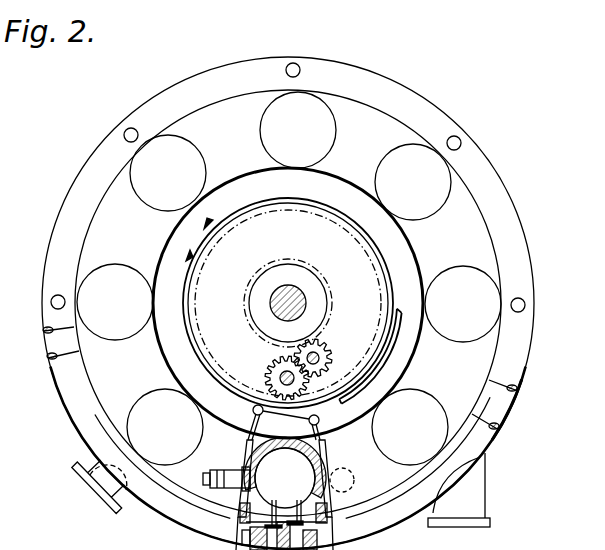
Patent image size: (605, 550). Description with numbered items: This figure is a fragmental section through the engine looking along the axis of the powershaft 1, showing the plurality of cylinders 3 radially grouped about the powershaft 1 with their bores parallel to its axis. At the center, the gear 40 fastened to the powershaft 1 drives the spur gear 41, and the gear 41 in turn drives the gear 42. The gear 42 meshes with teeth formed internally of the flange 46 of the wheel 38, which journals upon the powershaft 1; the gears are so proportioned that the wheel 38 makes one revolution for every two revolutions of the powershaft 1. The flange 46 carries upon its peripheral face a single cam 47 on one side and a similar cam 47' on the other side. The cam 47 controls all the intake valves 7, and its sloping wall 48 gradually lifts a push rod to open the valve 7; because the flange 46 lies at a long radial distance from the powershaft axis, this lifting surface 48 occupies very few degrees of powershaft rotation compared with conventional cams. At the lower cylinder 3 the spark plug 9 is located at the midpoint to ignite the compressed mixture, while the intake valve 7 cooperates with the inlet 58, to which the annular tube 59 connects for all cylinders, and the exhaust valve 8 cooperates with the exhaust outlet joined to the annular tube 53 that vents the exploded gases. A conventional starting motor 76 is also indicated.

The powershaft 1 is at (305, 309).
The cylinders 3 is at (289, 300).
The intake valve 7 is at (300, 512).
The exhaust valve 8 is at (278, 513).
The spark plug 9 is at (225, 471).
The wheel 38 is at (380, 346).
The gear 40 is at (274, 337).
The spur gear 41 is at (328, 347).
The gear 42 is at (270, 372).
The flange 46 is at (376, 368).
The cam 47 is at (284, 422).
The cam 47' is at (403, 386).
The sloping wall 48 is at (322, 415).
The annular tube 53 is at (500, 418).
The inlet 58 is at (329, 539).
The annular tube 59 is at (412, 508).
The starting motor 76 is at (354, 481).